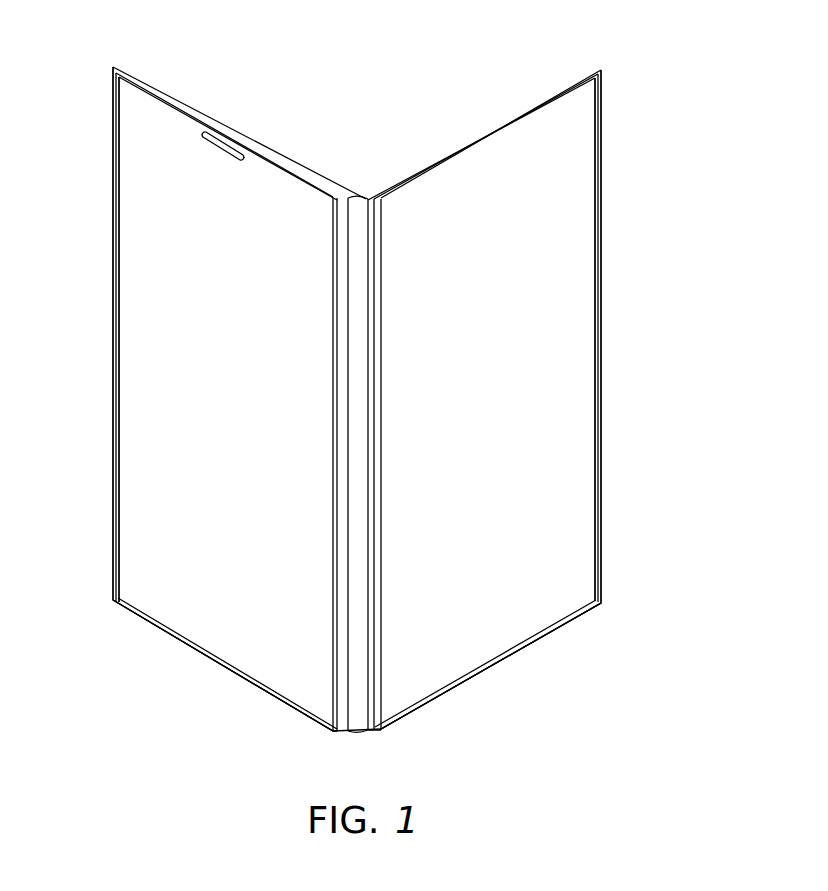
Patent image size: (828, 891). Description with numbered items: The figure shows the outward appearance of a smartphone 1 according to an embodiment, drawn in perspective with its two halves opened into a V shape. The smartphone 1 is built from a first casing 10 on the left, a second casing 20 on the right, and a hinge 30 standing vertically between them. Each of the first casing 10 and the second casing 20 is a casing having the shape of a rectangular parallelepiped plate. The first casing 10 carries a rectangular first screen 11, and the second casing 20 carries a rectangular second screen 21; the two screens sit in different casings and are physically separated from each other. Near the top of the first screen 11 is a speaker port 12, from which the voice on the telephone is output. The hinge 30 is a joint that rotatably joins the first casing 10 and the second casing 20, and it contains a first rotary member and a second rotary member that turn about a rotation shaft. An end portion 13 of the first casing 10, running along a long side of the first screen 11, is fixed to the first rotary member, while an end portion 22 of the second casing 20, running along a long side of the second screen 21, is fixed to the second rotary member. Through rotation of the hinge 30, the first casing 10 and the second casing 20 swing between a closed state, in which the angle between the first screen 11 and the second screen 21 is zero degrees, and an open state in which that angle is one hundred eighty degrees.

The smartphone 1 is at (630, 115).
The first casing 10 is at (257, 132).
The first screen 11 is at (127, 238).
The speaker port 12 is at (215, 123).
The end portion 13 is at (343, 735).
The second casing 20 is at (480, 138).
The second screen 21 is at (587, 240).
The end portion 22 is at (360, 738).
The hinge 30 is at (357, 198).